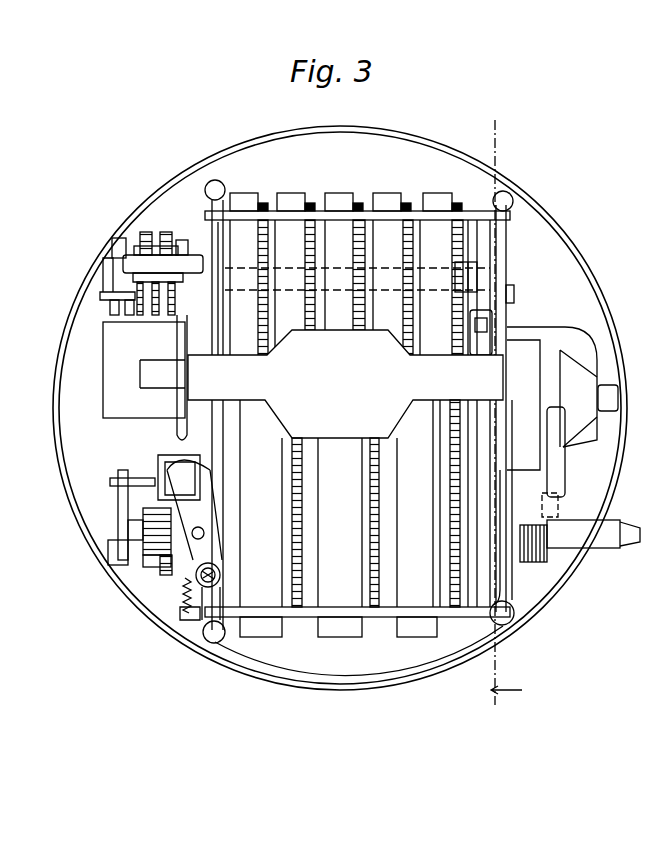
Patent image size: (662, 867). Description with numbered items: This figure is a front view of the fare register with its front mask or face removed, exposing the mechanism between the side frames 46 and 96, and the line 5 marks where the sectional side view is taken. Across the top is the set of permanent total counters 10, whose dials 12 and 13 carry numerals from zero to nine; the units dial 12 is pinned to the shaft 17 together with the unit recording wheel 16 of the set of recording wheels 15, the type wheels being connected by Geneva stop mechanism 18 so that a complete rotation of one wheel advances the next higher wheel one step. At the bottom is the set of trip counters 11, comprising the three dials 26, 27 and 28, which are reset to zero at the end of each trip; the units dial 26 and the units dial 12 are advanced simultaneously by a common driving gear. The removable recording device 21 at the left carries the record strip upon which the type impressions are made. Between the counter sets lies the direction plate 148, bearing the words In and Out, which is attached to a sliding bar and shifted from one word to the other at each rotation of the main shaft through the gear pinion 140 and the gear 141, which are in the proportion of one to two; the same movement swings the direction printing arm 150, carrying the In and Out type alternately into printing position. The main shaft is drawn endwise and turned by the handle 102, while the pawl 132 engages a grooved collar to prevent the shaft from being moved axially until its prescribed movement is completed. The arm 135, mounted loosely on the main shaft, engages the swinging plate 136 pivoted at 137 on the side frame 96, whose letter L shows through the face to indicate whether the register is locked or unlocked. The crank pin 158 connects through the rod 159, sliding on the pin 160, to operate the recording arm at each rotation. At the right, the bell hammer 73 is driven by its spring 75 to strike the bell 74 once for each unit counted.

The section line 5— 5 is at (506, 413).
The total counters 10 is at (357, 186).
The trip counters 11 is at (338, 640).
The units dial 12 is at (436, 200).
The dial 13 is at (387, 200).
The recording wheels 15 is at (160, 247).
The unit recording wheel 16 is at (172, 318).
The shaft 17 is at (513, 283).
The Geneva stop mechanism 18 is at (165, 232).
The removable recording device 21 is at (108, 352).
The units dial 26 is at (416, 627).
The dial 27 is at (345, 627).
The dial 28 is at (260, 627).
The side frame 46 is at (507, 298).
The bell hammer 73 is at (557, 462).
The bell 74 is at (580, 368).
The spring 75 is at (538, 562).
The side frame 96 is at (217, 316).
The handle 102 is at (625, 545).
The pawl 132 is at (200, 590).
The arm 135 is at (170, 532).
The swinging plate 136 is at (200, 498).
The pivot 137 is at (220, 577).
The gear pinion 140 is at (157, 553).
The gear 141 is at (180, 568).
The direction plate 148 is at (248, 391).
The direction printing arm 150 is at (130, 258).
The crank pin 158 is at (110, 555).
The rod 159 is at (124, 500).
The pin 160 is at (138, 475).